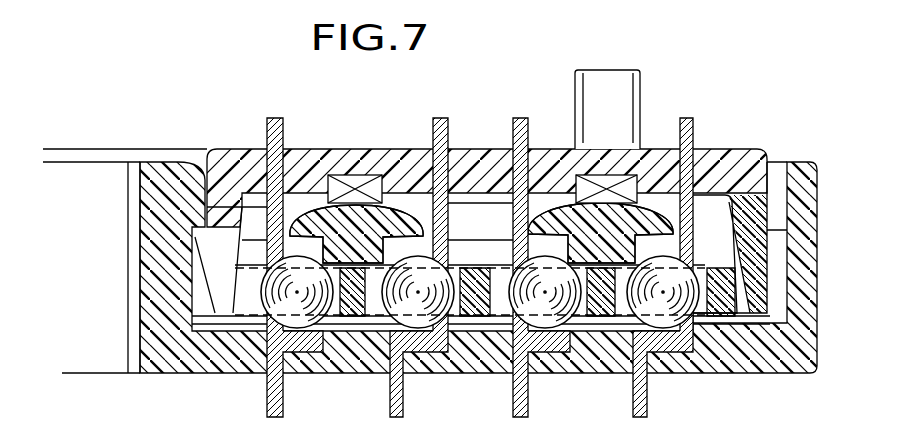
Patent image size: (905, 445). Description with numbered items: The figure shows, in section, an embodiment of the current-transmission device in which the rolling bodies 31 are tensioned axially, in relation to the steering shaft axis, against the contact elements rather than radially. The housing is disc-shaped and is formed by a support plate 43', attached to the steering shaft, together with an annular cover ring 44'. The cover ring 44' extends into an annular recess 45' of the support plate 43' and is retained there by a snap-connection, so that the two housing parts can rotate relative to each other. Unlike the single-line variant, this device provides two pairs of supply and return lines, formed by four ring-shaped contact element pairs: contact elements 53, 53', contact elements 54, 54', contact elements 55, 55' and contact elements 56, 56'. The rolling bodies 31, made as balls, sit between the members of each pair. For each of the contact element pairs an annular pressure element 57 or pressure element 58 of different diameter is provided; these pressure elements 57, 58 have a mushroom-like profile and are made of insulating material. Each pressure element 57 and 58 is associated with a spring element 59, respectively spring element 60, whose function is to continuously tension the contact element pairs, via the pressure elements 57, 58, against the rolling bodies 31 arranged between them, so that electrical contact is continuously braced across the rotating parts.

The rolling bodies 31 is at (265, 303).
The support plate 43' is at (478, 295).
The cover ring 44' is at (512, 239).
The annular recess 45' is at (481, 307).
The contact element 53 is at (663, 375).
The contact element 54 is at (541, 375).
The contact element 55 is at (419, 375).
The contact element 56 is at (295, 375).
The contact element 53' is at (700, 202).
The contact element 54' is at (516, 202).
The contact element 55' is at (435, 202).
The contact element 56' is at (265, 202).
The pressure element 57 is at (627, 223).
The pressure element 58 is at (370, 217).
The spring element 59 is at (592, 178).
The spring element 60 is at (340, 187).